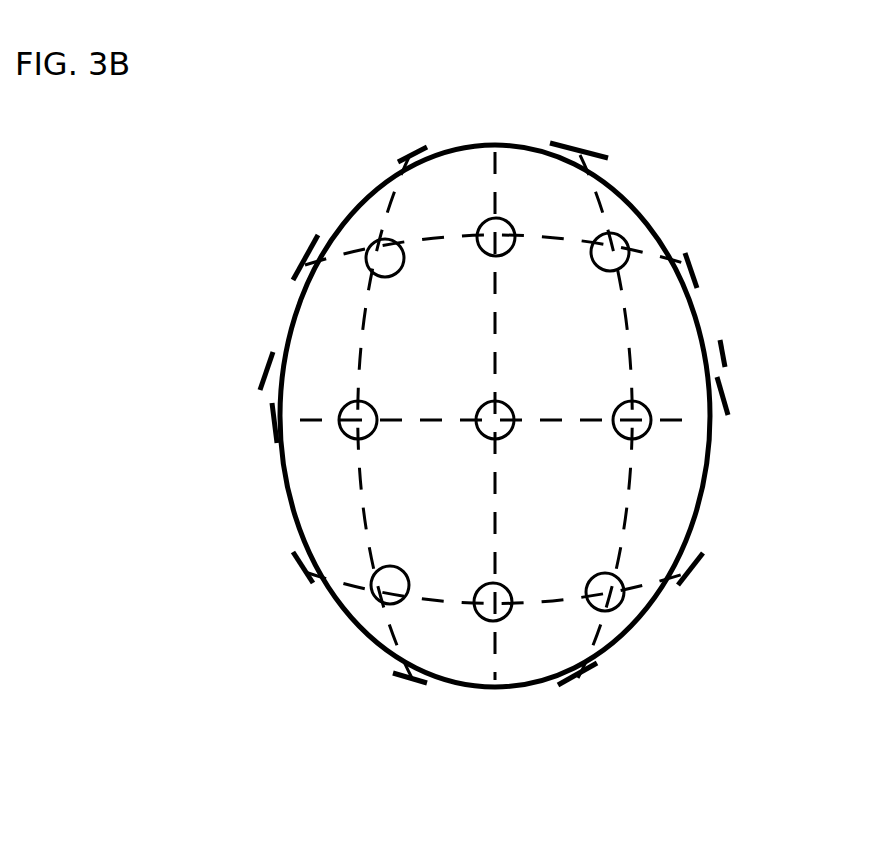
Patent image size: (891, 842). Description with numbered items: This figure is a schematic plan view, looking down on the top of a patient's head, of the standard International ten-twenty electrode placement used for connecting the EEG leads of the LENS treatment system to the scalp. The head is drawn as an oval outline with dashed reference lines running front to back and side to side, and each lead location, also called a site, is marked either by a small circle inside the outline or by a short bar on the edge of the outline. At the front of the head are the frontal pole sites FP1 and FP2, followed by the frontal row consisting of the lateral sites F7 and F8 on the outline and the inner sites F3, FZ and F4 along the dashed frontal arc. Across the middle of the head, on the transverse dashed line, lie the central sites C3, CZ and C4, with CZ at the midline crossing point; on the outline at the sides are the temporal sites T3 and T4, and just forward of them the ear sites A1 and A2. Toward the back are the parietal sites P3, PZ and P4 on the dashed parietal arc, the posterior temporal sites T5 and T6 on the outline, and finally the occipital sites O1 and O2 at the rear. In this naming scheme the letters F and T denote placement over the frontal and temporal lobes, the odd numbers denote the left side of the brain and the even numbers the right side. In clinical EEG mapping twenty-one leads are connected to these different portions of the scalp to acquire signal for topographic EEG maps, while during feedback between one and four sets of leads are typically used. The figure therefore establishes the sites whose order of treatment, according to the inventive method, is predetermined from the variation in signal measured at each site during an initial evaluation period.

The electrode placement site FP1 is at (398, 153).
The electrode placement site FP2 is at (605, 152).
The electrode placement site F7 is at (300, 265).
The electrode placement site F8 is at (695, 265).
The electrode placement site A1 is at (255, 363).
The electrode placement site A2 is at (728, 352).
The electrode placement site T3 is at (267, 428).
The electrode placement site T4 is at (725, 400).
The electrode placement site T5 is at (307, 577).
The electrode placement site T6 is at (683, 585).
The electrode placement site O1 is at (408, 677).
The electrode placement site O2 is at (583, 682).
The electrode placement site F3 is at (406, 282).
The electrode placement site FZ is at (506, 265).
The electrode placement site F4 is at (612, 276).
The electrode placement site C3 is at (385, 398).
The electrode placement site CZ is at (522, 399).
The electrode placement site C4 is at (614, 398).
The electrode placement site P3 is at (411, 561).
The electrode placement site PZ is at (516, 574).
The electrode placement site P4 is at (592, 556).